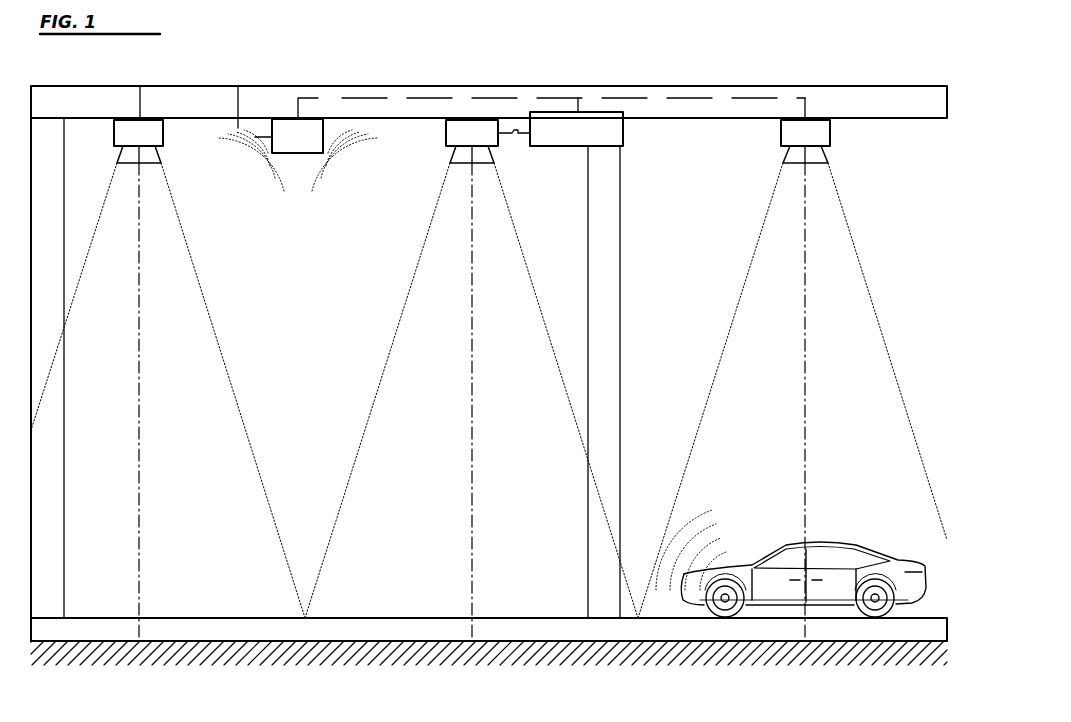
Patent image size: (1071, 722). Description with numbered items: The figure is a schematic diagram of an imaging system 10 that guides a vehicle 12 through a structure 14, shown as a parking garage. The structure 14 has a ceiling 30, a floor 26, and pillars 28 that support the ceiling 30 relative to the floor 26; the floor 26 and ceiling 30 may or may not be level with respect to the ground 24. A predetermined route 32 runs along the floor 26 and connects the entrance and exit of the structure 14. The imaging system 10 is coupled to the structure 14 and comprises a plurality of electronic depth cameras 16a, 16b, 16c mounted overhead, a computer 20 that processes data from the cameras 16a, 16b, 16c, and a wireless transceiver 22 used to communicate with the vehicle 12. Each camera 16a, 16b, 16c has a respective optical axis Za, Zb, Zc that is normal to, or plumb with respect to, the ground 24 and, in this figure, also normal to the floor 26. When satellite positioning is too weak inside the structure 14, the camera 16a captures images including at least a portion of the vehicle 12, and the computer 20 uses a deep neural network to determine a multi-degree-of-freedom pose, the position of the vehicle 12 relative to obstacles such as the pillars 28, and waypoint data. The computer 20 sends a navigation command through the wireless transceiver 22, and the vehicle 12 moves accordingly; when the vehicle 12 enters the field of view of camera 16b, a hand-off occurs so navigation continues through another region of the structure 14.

The imaging system 10 is at (683, 235).
The vehicle 12 is at (844, 534).
The structure 14 is at (897, 83).
The electronic depth camera 16a is at (836, 137).
The electronic depth camera 16b is at (442, 144).
The electronic depth camera 16c is at (112, 135).
The computer 20 is at (560, 129).
The wireless transceiver 22 is at (298, 155).
The ground 24 is at (190, 640).
The floor 26 is at (365, 617).
The pillars 28 is at (330, 382).
The ceiling 30 is at (683, 119).
The predetermined route 32 is at (502, 614).
The optical axis Za is at (806, 372).
The optical axis Zb is at (473, 372).
The optical axis Zc is at (140, 372).